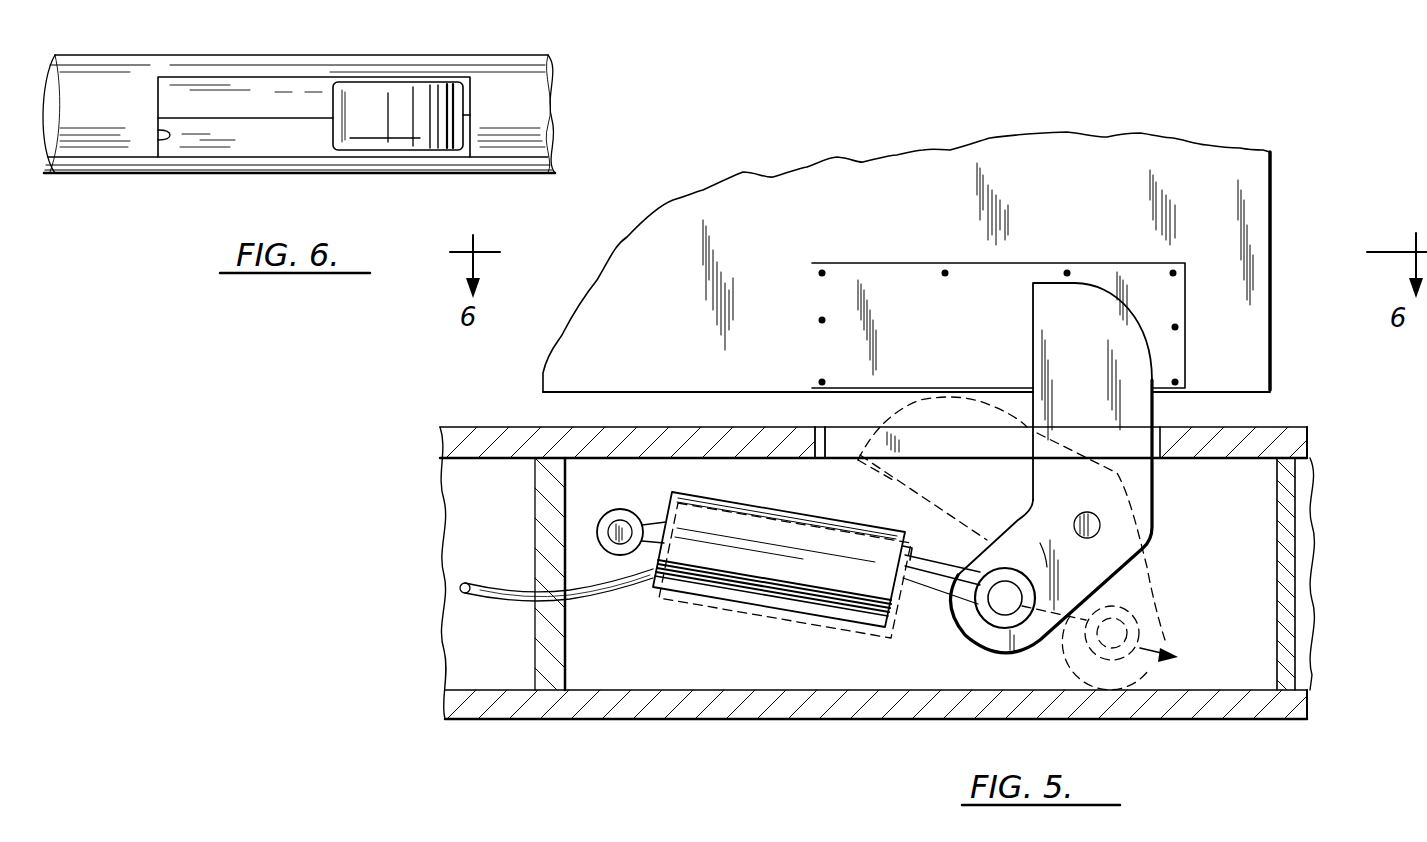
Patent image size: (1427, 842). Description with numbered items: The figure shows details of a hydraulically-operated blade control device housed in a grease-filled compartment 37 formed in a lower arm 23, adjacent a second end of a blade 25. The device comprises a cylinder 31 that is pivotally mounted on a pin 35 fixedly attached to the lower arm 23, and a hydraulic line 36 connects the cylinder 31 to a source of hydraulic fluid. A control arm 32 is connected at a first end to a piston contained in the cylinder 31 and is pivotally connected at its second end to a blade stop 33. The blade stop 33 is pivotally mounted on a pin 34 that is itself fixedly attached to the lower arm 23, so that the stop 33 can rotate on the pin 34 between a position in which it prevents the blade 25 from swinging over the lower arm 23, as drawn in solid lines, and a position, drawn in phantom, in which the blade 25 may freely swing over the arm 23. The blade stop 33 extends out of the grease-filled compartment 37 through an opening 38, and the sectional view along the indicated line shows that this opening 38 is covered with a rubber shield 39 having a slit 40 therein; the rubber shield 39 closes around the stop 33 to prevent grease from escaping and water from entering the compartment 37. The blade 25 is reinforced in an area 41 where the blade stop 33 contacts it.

In FIG. 6, the lower arm 23 is at (122, 150).
In FIG. 5, the lower arm 23 is at (1193, 702).
In FIG. 5, the blade 25 is at (1242, 320).
In FIG. 5, the cylinder 31 is at (783, 577).
In FIG. 5, the control arm 32 is at (937, 587).
In FIG. 6, the blade stop 33 is at (368, 130).
In FIG. 5, the blade stop 33 is at (1130, 468).
In FIG. 5, the pin 34 is at (1100, 525).
In FIG. 5, the pin 35 is at (617, 527).
In FIG. 5, the hydraulic line 36 is at (490, 597).
In FIG. 5, the grease-filled compartment 37 is at (650, 653).
In FIG. 6, the opening 38 is at (160, 137).
In FIG. 5, the opening 38 is at (830, 427).
In FIG. 6, the rubber shield 39 is at (250, 140).
In FIG. 6, the slit 40 is at (297, 118).
In FIG. 5, the reinforced area 41 is at (975, 293).